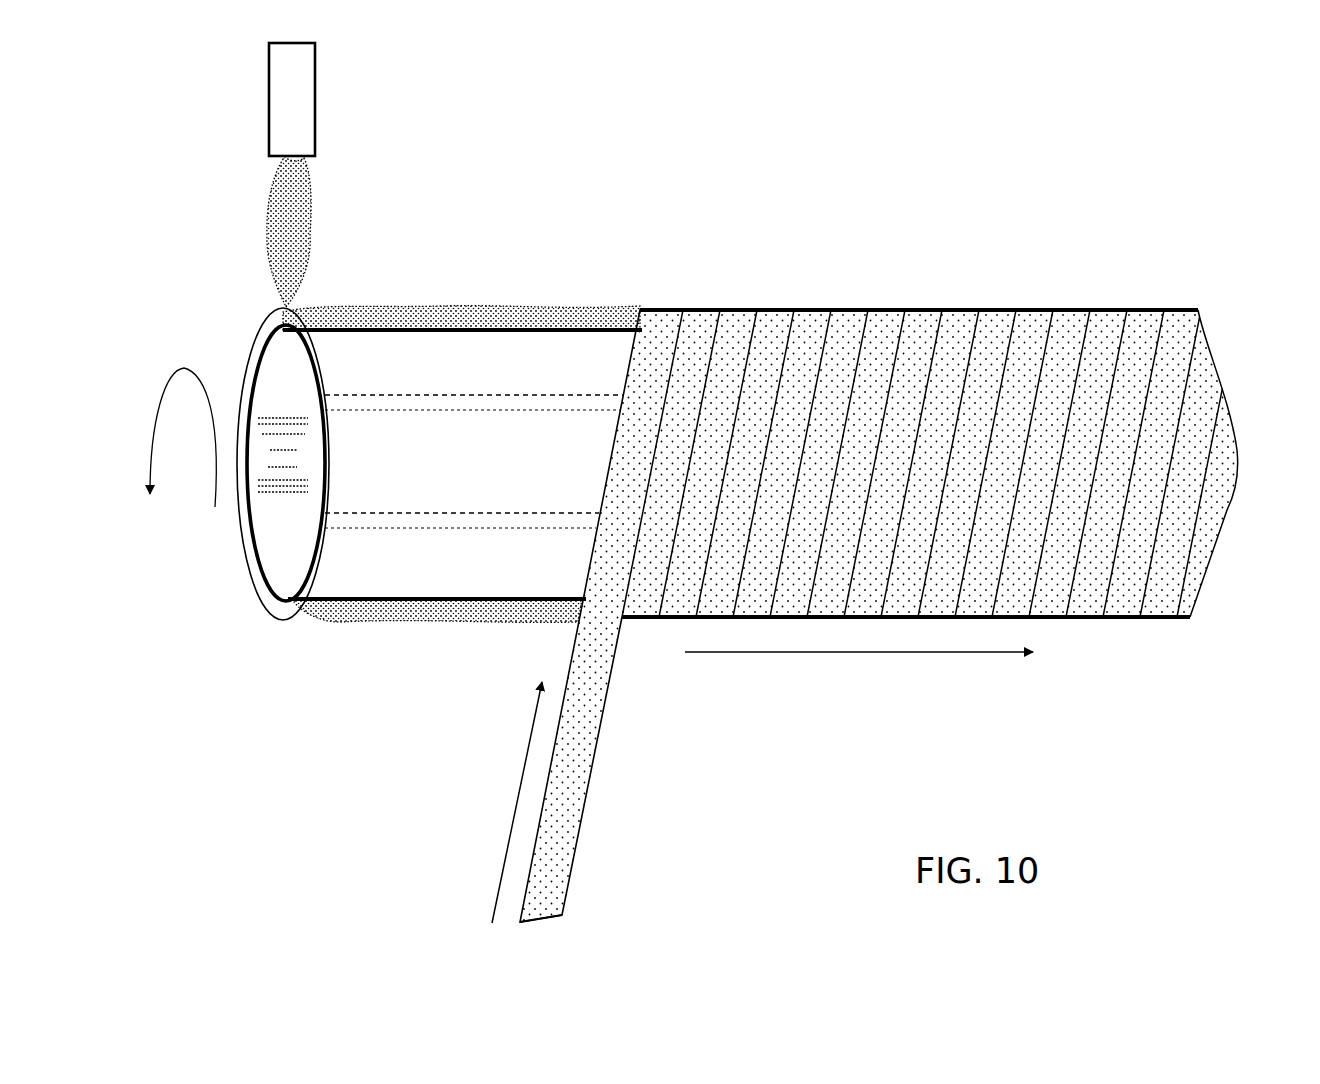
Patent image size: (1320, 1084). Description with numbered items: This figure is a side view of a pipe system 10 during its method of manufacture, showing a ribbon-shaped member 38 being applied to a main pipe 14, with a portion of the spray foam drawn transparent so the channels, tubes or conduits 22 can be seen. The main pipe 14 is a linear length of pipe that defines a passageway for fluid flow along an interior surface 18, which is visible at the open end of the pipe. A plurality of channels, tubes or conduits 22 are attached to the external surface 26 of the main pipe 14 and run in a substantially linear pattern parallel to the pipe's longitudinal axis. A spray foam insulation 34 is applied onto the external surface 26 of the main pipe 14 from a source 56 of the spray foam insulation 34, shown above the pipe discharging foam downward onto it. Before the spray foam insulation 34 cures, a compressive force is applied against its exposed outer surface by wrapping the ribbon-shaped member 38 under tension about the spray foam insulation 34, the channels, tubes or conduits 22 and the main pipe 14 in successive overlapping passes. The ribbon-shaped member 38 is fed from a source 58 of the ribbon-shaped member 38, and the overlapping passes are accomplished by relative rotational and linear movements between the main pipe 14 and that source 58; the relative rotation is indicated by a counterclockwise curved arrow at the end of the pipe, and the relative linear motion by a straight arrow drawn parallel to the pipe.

The pipe system 10 is at (1218, 302).
The main pipe 14 is at (280, 573).
The interior surface 18 is at (293, 531).
The channels, tubes or conduits 22 is at (508, 403).
The external surface 26 is at (447, 472).
The spray foam insulation 34 is at (555, 306).
The ribbon-shaped member 38 is at (598, 710).
The source of spray foam insulation 56 is at (282, 97).
The source of the ribbon-shaped member 58 is at (562, 918).